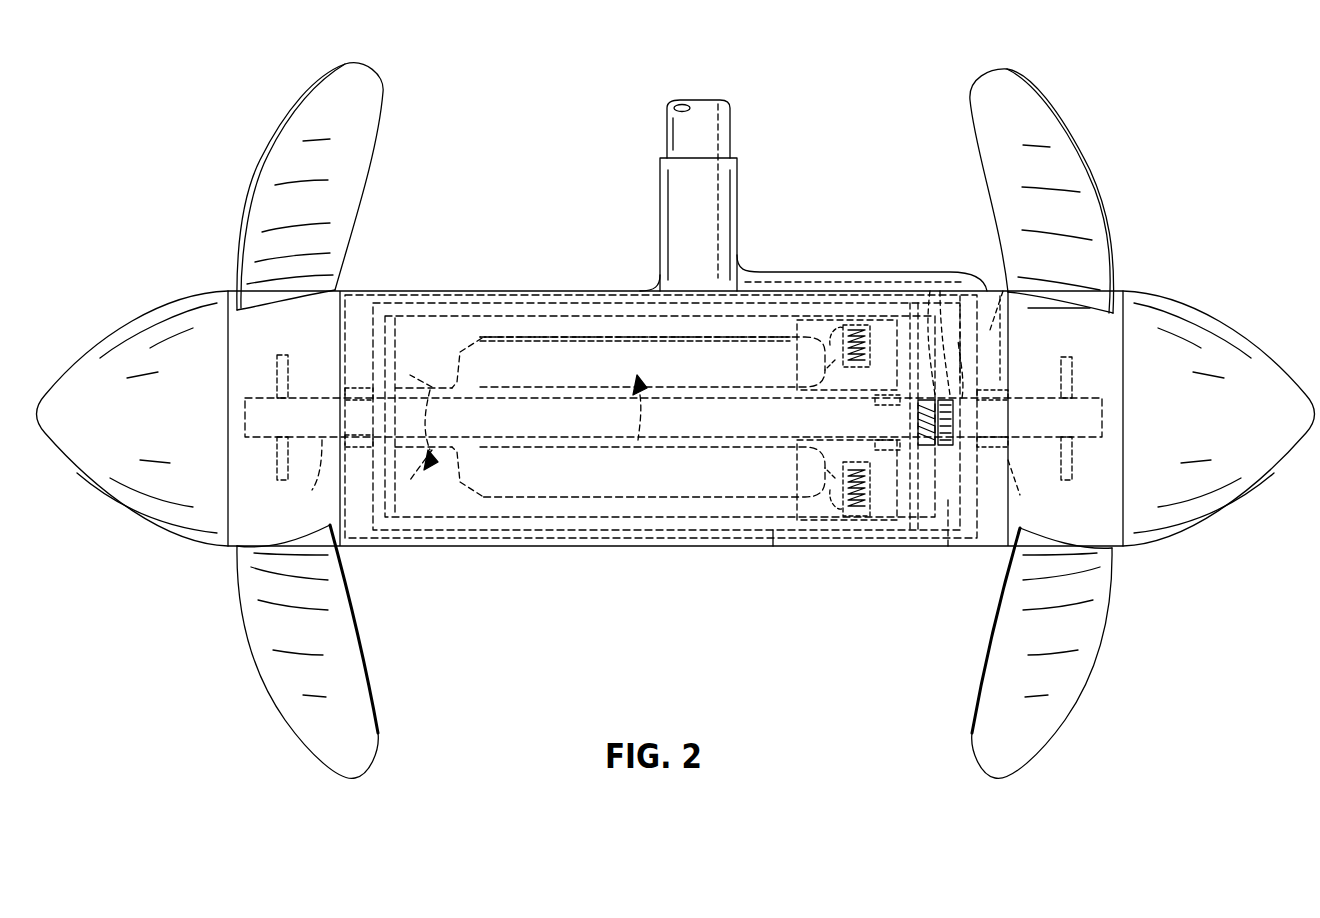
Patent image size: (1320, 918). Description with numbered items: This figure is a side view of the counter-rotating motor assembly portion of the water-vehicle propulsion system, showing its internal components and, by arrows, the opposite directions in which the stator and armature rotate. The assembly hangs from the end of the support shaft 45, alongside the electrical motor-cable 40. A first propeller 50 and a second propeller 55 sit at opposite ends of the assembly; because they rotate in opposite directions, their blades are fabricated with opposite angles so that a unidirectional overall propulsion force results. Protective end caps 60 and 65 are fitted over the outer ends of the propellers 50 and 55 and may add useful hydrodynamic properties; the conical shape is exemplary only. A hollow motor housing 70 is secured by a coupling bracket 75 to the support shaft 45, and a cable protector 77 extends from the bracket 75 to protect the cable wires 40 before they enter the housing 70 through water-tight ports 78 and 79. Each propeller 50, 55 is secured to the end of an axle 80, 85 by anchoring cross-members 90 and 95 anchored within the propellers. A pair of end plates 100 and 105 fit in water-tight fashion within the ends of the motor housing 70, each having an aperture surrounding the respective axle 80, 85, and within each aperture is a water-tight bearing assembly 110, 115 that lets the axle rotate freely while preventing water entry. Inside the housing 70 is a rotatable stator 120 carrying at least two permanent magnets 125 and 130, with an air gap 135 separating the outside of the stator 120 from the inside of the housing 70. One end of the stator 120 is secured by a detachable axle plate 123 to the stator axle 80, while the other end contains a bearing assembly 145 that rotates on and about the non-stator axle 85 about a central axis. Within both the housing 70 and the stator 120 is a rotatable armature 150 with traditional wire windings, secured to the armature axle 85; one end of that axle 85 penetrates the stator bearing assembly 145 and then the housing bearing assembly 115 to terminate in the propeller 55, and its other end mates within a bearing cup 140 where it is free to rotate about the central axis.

The electrical motor-cable 40 is at (822, 282).
The support shaft 45 is at (667, 128).
The first propeller 50 is at (1082, 138).
The second propeller 55 is at (268, 137).
The protective end cap 60 is at (1255, 338).
The protective end cap 65 is at (137, 308).
The motor housing 70 is at (648, 289).
The coupling bracket 75 is at (660, 205).
The cable protector 77 is at (884, 272).
The water-tight port 78 is at (992, 364).
The water-tight port 79 is at (985, 325).
The stator axle 80 is at (1103, 428).
The armature axle 85 is at (299, 476).
The anchoring cross-member 90 is at (1072, 380).
The anchoring cross-member 95 is at (278, 380).
The end plate 100 is at (1012, 270).
The end plate 105 is at (365, 300).
The water-tight bearing assembly 110 is at (1030, 500).
The water-tight bearing assembly 115 is at (398, 490).
The rotatable stator 120 is at (770, 550).
The detachable axle plate 123 is at (948, 552).
The magnet 125 is at (640, 515).
The magnet 130 is at (600, 330).
The air gap 135 is at (387, 315).
The bearing cup 140 is at (870, 440).
The bearing assembly 145 is at (408, 348).
The rotatable armature 150 is at (750, 475).